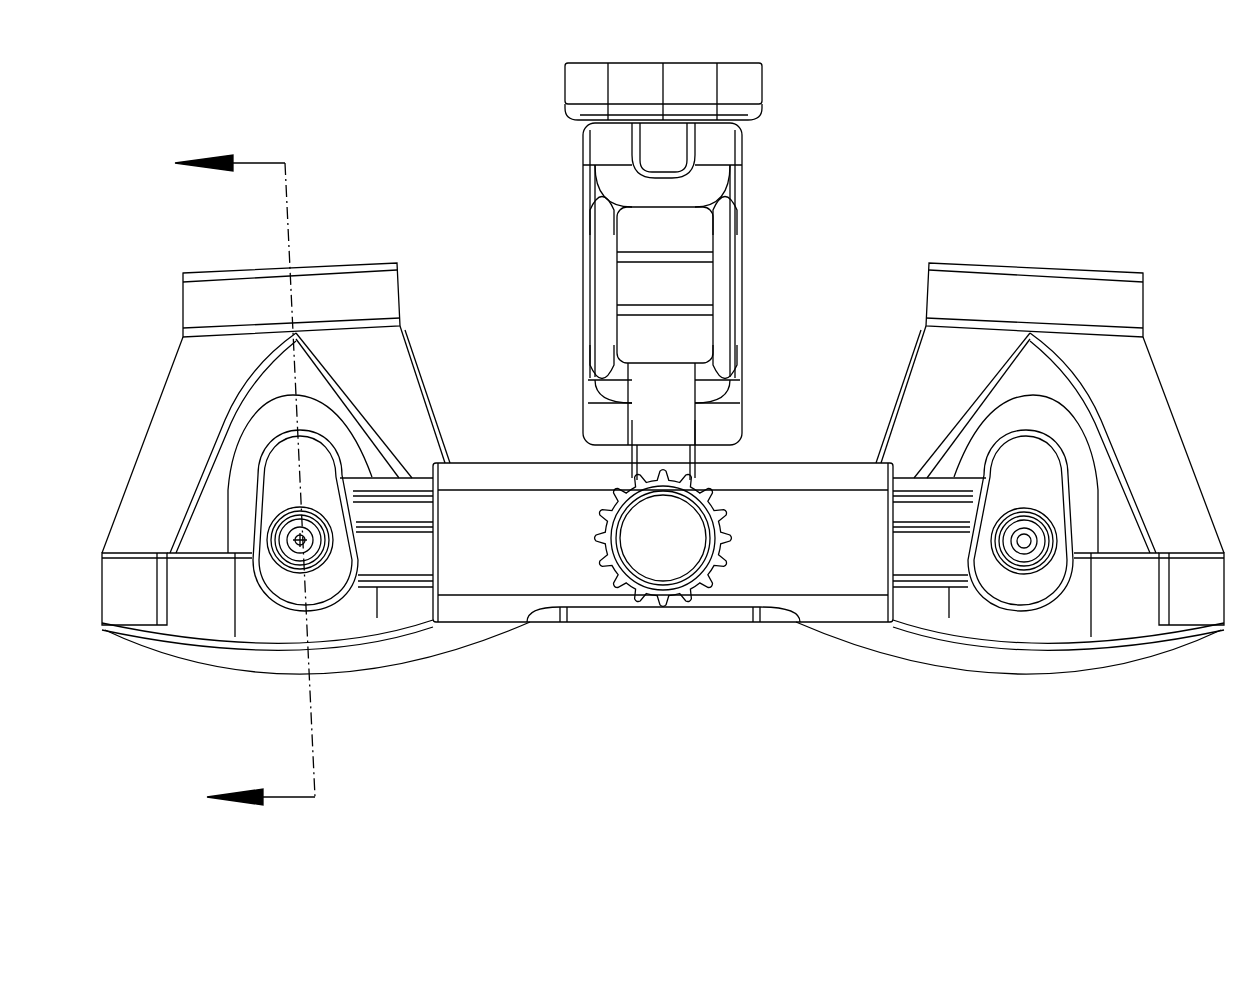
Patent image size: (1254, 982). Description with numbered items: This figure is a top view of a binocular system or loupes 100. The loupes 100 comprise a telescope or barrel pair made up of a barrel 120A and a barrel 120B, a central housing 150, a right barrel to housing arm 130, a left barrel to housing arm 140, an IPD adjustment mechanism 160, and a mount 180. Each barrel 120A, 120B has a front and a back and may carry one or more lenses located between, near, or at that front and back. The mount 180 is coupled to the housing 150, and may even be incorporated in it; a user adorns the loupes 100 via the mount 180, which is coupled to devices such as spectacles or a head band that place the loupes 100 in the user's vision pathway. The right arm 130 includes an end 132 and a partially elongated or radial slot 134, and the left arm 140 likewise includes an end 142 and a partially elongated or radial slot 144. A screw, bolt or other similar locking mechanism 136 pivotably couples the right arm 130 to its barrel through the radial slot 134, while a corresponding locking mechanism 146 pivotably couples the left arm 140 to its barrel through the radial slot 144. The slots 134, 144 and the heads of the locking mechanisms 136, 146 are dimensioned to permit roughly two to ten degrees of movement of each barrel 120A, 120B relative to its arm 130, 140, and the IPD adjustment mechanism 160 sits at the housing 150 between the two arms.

The binocular loupes 100 is at (566, 874).
The barrel 120A is at (262, 262).
The barrel 120B is at (1025, 262).
The right barrel to housing arm 130 is at (393, 470).
The end 132 is at (258, 507).
The radial slot 134 is at (265, 548).
The locking mechanism 136 is at (340, 535).
The left barrel to housing arm 140 is at (928, 465).
The end 142 is at (1025, 430).
The radial slot 144 is at (1055, 540).
The locking mechanism 146 is at (990, 552).
The housing 150 is at (536, 463).
The IPD adjustment mechanism 160 is at (597, 535).
The mount 180 is at (744, 210).